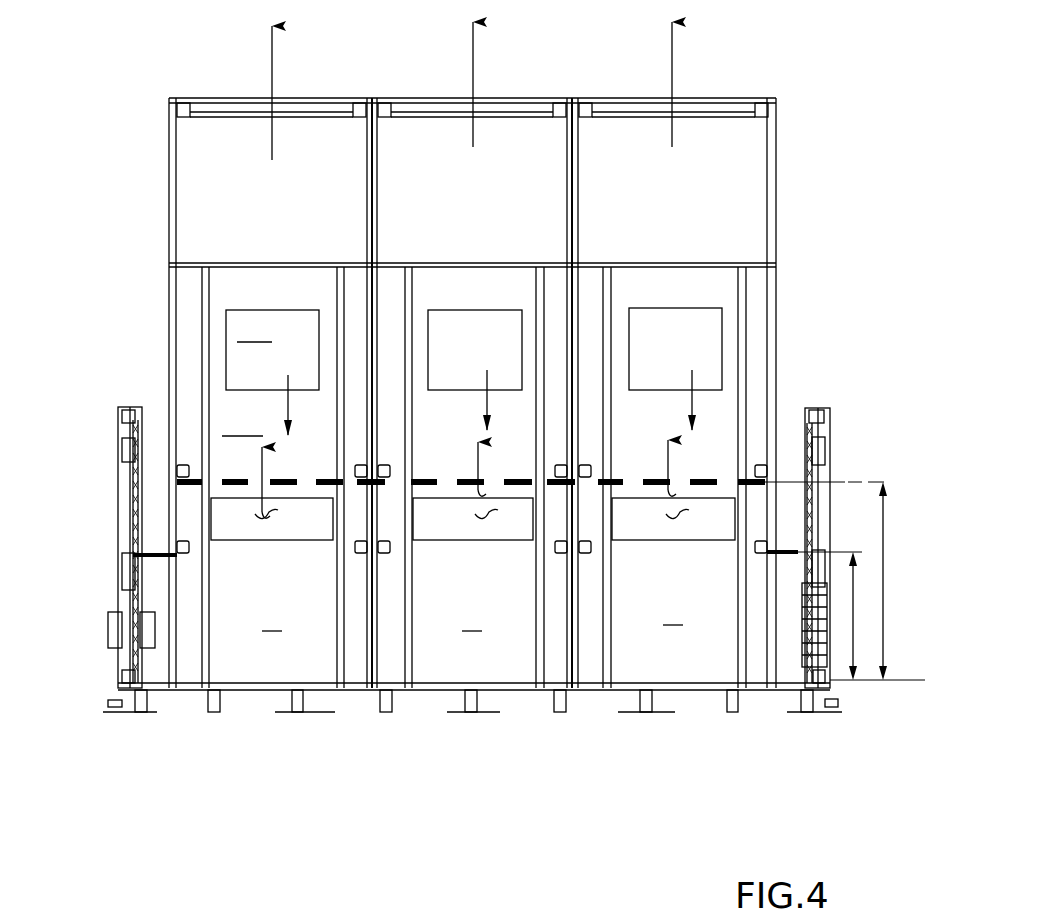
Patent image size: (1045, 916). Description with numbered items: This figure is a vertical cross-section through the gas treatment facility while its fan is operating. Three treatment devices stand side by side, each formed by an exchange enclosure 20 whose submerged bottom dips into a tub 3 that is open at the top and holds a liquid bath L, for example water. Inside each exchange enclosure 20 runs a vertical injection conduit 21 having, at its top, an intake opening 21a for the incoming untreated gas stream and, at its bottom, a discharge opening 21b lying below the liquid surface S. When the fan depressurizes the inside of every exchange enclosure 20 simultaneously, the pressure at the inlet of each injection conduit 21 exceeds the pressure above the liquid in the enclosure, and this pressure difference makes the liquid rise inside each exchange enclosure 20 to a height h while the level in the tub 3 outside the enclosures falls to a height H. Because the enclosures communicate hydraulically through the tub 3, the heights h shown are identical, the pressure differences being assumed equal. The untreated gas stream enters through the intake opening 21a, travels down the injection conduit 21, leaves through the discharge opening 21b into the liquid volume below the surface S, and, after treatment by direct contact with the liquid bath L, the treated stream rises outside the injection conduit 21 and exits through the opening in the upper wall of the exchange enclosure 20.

The exchange enclosure 20 is at (195, 220).
The vertical injection conduit 21 is at (218, 370).
The intake opening 21a is at (288, 371).
The discharge opening 21b is at (243, 540).
The tub 3 is at (810, 480).
The liquid bath L is at (157, 595).
The liquid surface S is at (462, 478).
The liquid height in exchange enclosure h is at (877, 581).
The liquid height in tub H is at (835, 616).